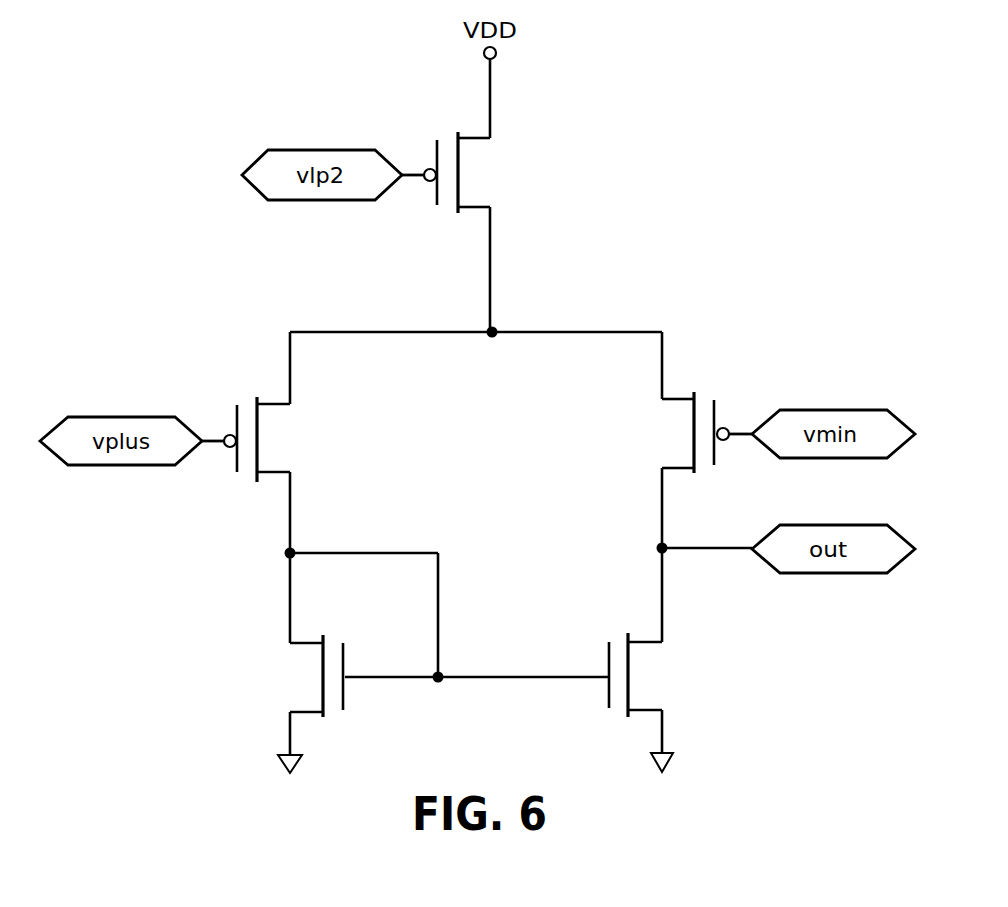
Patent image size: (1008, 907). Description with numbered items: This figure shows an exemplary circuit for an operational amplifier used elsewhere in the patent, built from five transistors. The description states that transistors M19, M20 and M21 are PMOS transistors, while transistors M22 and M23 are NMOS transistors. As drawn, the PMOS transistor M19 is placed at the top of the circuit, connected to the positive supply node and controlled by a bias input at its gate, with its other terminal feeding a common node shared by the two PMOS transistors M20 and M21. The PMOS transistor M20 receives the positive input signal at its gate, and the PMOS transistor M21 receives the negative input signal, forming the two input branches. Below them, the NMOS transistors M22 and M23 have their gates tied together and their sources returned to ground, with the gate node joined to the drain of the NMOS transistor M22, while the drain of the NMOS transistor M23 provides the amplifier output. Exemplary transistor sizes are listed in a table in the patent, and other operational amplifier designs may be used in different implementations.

The PMOS transistor M19 is at (470, 172).
The PMOS transistor M20 is at (270, 439).
The PMOS transistor M21 is at (682, 432).
The NMOS transistor M22 is at (303, 676).
The NMOS transistor M23 is at (648, 675).